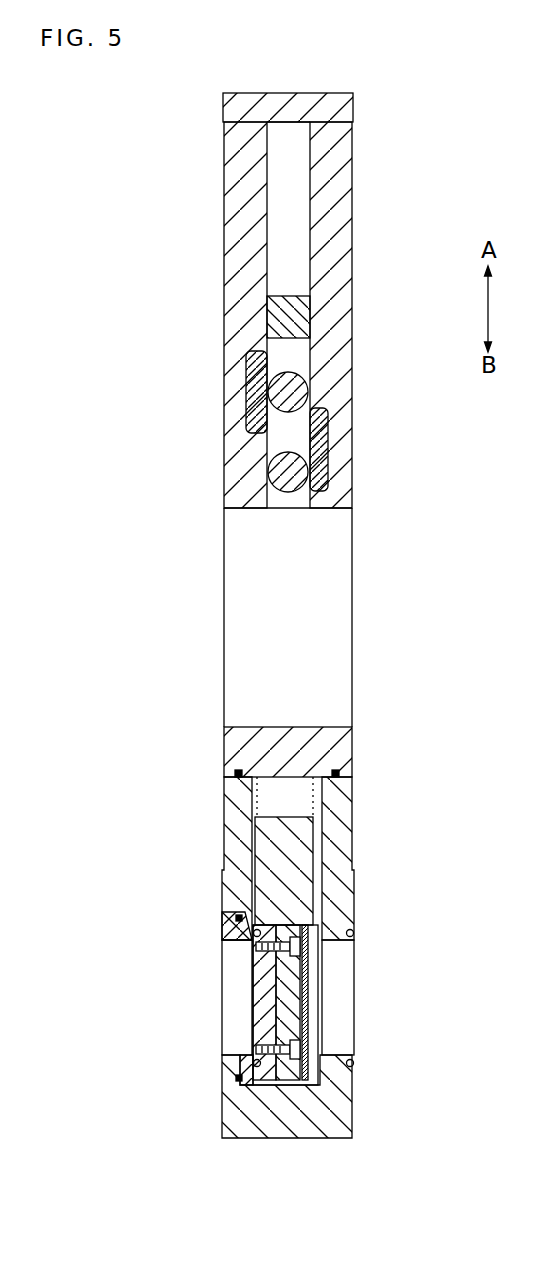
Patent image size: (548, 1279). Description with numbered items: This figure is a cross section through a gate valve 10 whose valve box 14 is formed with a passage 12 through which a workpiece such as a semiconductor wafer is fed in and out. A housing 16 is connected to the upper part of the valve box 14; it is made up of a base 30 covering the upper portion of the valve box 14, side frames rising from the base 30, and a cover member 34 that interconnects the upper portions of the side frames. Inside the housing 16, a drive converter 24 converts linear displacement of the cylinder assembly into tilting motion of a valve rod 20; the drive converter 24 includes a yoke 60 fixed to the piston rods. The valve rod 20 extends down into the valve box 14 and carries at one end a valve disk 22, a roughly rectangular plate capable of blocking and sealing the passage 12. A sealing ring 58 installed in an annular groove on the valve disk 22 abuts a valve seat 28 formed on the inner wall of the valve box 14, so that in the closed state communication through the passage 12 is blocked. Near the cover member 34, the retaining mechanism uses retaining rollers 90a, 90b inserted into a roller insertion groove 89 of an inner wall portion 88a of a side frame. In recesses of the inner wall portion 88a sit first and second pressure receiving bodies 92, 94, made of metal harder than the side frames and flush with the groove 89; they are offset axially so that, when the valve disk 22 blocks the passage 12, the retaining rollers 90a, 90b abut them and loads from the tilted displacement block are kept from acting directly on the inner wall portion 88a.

The gate valve 10 is at (421, 66).
The passage 12 is at (237, 1035).
The valve box 14 is at (302, 1130).
The housing 16 is at (371, 728).
The valve rod 20 is at (288, 852).
The valve disk 22 is at (258, 986).
The drive converter 24 is at (371, 207).
The valve seat 28 is at (259, 1066).
The base 30 is at (341, 768).
The cover member 34 is at (316, 96).
The sealing ring 58 is at (250, 928).
The yoke 60 is at (289, 300).
The inner wall portion 88a is at (250, 205).
The roller insertion groove 89 is at (291, 240).
The retaining roller 90a is at (282, 478).
The retaining roller 90b is at (300, 388).
The first pressure receiving body 92 is at (323, 441).
The second pressure receiving body 94 is at (256, 395).